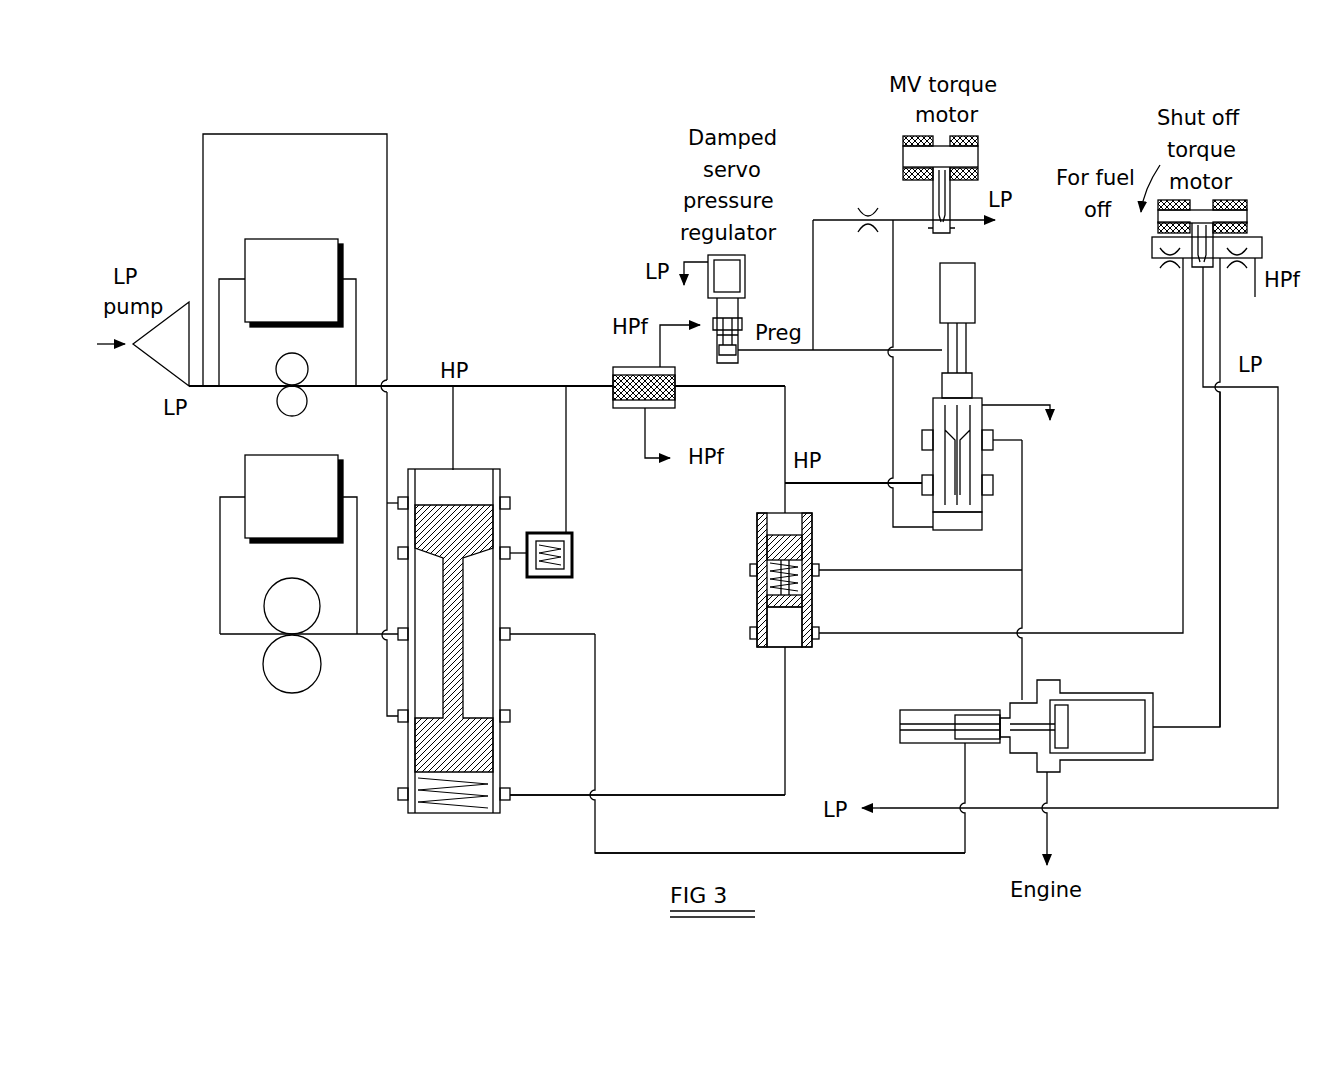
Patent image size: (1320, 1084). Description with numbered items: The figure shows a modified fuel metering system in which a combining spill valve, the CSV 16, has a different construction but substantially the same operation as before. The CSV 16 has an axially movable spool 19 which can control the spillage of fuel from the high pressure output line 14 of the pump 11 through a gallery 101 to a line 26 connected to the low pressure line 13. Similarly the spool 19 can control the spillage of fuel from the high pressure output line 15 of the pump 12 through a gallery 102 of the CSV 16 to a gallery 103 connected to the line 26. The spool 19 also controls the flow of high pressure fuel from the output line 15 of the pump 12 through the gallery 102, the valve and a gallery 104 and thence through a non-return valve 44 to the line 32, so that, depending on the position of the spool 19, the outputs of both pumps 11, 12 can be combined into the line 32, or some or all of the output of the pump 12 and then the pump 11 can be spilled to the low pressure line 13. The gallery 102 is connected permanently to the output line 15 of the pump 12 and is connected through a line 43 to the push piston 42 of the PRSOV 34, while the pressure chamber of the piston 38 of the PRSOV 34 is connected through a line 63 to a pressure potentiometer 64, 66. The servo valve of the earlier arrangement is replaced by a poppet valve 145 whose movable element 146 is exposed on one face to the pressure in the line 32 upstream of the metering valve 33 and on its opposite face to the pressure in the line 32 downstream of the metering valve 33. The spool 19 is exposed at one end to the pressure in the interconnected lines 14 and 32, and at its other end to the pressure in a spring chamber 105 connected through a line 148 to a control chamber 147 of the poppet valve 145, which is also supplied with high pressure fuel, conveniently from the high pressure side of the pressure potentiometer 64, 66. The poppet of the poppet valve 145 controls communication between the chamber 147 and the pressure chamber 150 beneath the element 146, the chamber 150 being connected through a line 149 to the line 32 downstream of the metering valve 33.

The pump 11 is at (292, 398).
The pump 12 is at (268, 675).
The low pressure line 13 is at (203, 200).
The high pressure output line 14 is at (413, 386).
The high pressure output line 15 is at (374, 642).
The CSV 16 is at (449, 654).
The spool 19 is at (490, 745).
The line 26 is at (387, 185).
The line 32 is at (500, 386).
The metering valve 33 is at (1008, 430).
The PRSOV 34 is at (1039, 723).
The piston 38 is at (1110, 698).
The push piston 42 is at (950, 736).
The line 43 is at (795, 853).
The non-return valve 44 is at (572, 572).
The line 63 is at (1222, 462).
The pressure potentiometer 64 is at (1170, 270).
The pressure potentiometer 66 is at (1234, 266).
The gallery 101 is at (505, 497).
The gallery 102 is at (510, 634).
The gallery 103 is at (505, 710).
The gallery 104 is at (505, 547).
The spring chamber 105 is at (505, 805).
The poppet valve 145 is at (833, 602).
The movable element 146 is at (812, 553).
The control chamber 147 is at (775, 648).
The line 148 is at (716, 795).
The line 149 is at (828, 613).
The pressure chamber 150 is at (812, 588).